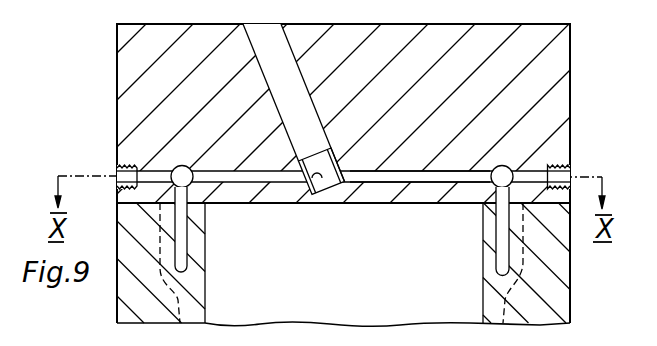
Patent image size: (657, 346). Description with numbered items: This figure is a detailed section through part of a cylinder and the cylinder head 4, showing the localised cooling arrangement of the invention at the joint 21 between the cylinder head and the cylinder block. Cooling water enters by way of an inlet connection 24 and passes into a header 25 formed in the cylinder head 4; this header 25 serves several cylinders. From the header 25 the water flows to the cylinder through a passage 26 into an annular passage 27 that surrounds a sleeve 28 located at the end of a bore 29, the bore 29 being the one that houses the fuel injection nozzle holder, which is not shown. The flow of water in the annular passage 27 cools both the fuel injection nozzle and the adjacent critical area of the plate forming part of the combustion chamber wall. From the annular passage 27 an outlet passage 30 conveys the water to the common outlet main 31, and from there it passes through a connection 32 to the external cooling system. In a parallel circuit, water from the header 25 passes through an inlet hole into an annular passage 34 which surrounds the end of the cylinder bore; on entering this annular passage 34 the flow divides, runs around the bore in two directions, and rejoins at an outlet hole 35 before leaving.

The cylinder head 4 is at (580, 86).
The joint 21 is at (569, 205).
The inlet connection 24 is at (116, 182).
The header 25 is at (175, 168).
The passage 26 is at (246, 183).
The annular passage 27 is at (347, 167).
The sleeve 28 is at (322, 183).
The bore 29 is at (297, 128).
The outlet passage 30 is at (428, 183).
The common outlet main 31 is at (508, 168).
The connection 32 is at (565, 171).
The annular passage 34 is at (184, 258).
The outlet hole 35 is at (497, 234).